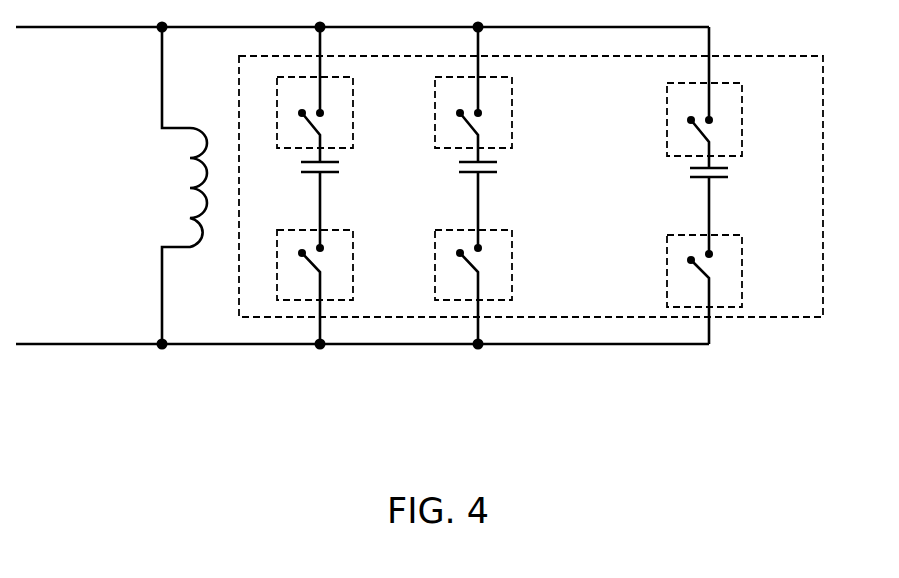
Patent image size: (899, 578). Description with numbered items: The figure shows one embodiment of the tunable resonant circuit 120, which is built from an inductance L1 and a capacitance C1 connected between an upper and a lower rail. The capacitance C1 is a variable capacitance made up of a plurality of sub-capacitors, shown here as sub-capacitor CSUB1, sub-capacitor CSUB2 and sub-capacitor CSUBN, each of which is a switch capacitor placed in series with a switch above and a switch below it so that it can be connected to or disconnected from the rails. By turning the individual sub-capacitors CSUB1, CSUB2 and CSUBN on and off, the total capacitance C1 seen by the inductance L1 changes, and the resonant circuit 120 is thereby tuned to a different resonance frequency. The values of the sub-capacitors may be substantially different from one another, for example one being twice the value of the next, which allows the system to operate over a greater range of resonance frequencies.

The resonant circuit 120 is at (164, 430).
The inductance L1 is at (164, 185).
The capacitance C1 is at (552, 186).
The sub-capacitor CSUB1 is at (346, 185).
The sub-capacitor CSUB2 is at (504, 185).
The sub-capacitor CSUBN is at (735, 185).